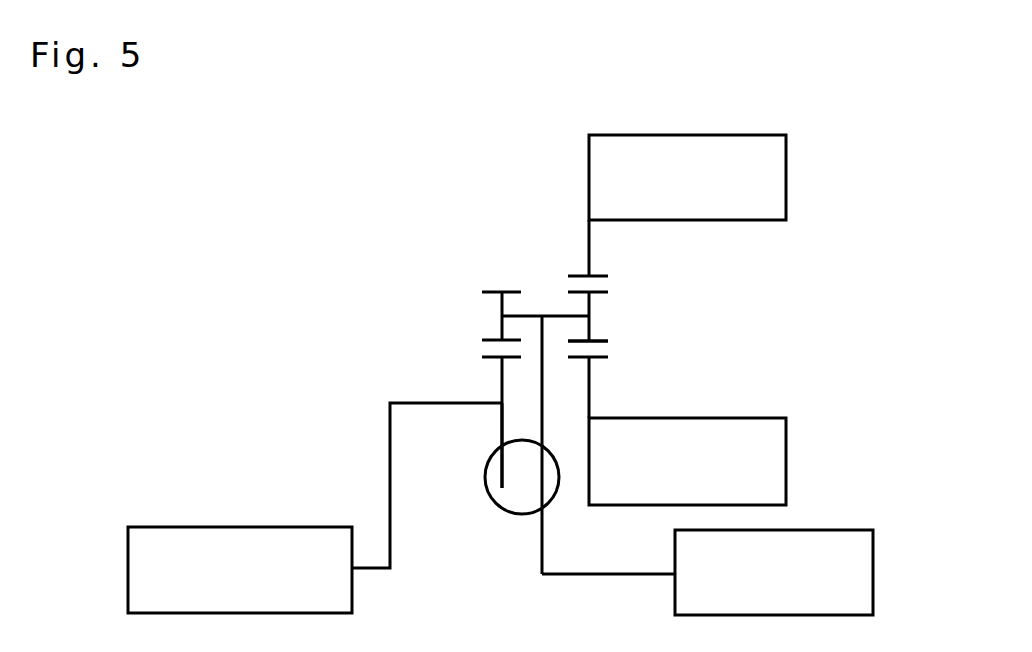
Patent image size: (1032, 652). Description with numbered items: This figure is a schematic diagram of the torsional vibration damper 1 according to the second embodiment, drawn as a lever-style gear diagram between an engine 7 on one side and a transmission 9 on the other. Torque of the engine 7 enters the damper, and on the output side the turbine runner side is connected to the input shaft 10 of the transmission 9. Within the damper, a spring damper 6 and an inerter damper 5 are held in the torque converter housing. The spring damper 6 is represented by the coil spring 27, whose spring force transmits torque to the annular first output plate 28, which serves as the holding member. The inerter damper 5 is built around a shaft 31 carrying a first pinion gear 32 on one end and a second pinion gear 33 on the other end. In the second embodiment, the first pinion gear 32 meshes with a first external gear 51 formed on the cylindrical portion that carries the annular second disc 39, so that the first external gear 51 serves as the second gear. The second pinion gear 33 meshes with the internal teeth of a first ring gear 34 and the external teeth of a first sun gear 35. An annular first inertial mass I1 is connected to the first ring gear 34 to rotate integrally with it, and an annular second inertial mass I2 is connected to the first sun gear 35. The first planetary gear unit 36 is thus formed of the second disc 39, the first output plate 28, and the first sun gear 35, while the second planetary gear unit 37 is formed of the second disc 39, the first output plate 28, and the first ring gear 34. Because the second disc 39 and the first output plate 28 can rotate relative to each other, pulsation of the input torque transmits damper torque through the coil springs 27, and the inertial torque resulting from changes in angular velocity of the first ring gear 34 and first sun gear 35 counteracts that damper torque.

The torsional vibration damper 1 is at (444, 292).
The inerter damper 5 is at (628, 297).
The spring damper 6 is at (453, 473).
The engine 7 is at (227, 527).
The transmission 9 is at (873, 570).
The input shaft 10 is at (607, 575).
The coil spring 27 is at (496, 506).
The first output plate 28 is at (540, 551).
The shaft 31 is at (530, 315).
The first pinion gear 32 is at (493, 290).
The second pinion gear 33 is at (602, 343).
The first ring gear 34 is at (605, 275).
The first sun gear 35 is at (600, 359).
The first planetary gear unit 36 is at (615, 393).
The second planetary gear unit 37 is at (574, 218).
The second disc 39 is at (498, 422).
The first external gear 51 is at (485, 347).
The first inertial mass I1 is at (786, 179).
The second inertial mass I2 is at (786, 462).